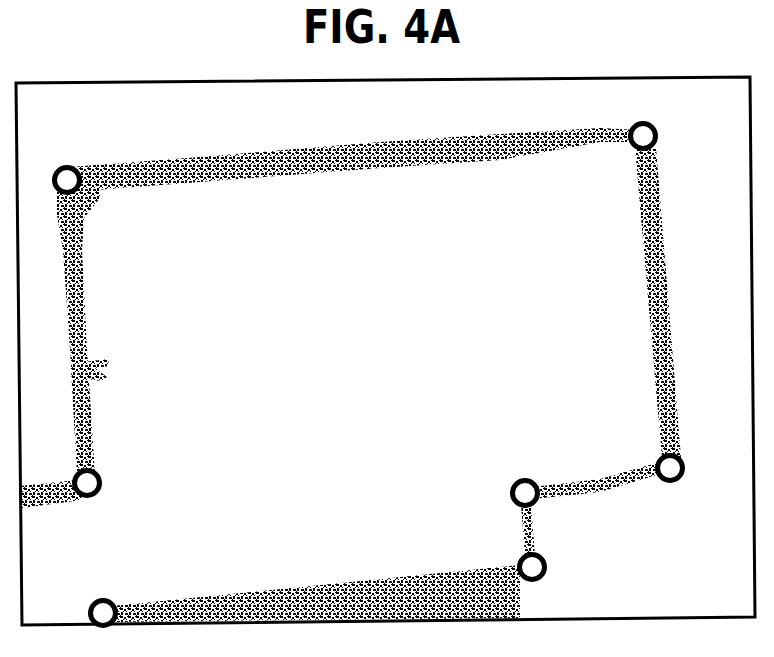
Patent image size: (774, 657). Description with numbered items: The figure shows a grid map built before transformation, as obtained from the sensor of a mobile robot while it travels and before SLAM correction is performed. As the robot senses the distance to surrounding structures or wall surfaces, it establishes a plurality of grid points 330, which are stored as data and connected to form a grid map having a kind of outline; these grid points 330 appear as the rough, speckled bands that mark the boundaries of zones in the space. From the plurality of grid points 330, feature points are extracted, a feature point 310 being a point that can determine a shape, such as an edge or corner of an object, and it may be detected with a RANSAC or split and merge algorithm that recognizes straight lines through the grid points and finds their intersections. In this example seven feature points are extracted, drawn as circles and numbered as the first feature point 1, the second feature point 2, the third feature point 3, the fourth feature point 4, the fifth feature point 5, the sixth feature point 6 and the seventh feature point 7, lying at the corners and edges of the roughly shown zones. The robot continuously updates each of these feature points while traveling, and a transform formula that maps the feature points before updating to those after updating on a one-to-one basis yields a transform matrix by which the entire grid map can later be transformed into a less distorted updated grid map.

The feature point 1 is at (111, 591).
The feature point 2 is at (547, 581).
The feature point 3 is at (537, 469).
The feature point 4 is at (692, 452).
The feature point 5 is at (657, 128).
The feature point 6 is at (80, 157).
The feature point 7 is at (99, 466).
The feature point 310 is at (100, 479).
The grid points 330 is at (313, 598).